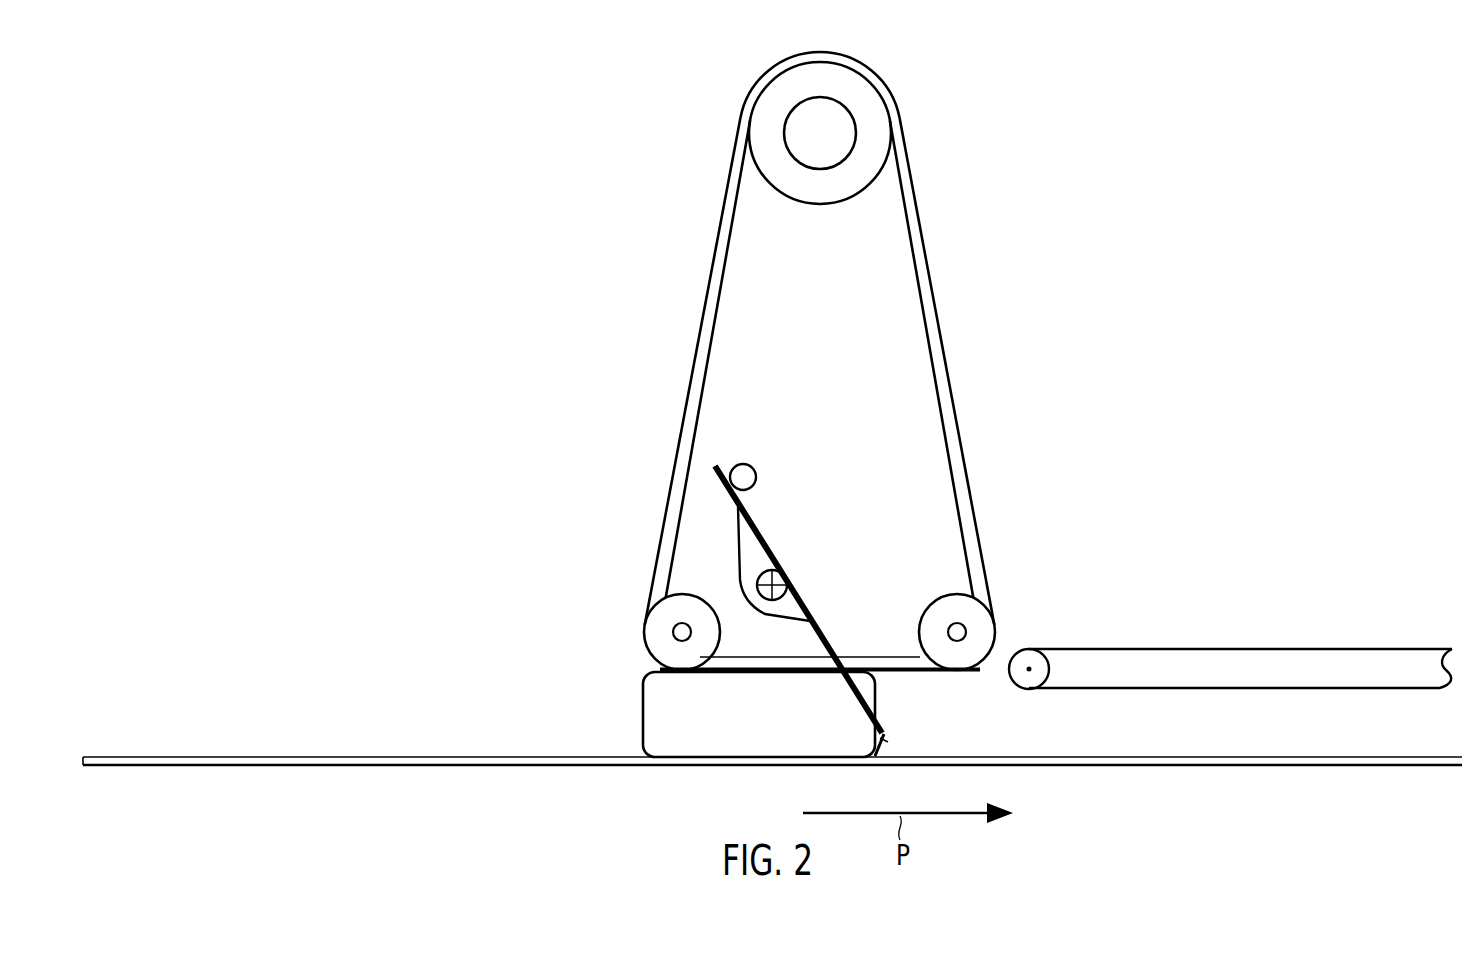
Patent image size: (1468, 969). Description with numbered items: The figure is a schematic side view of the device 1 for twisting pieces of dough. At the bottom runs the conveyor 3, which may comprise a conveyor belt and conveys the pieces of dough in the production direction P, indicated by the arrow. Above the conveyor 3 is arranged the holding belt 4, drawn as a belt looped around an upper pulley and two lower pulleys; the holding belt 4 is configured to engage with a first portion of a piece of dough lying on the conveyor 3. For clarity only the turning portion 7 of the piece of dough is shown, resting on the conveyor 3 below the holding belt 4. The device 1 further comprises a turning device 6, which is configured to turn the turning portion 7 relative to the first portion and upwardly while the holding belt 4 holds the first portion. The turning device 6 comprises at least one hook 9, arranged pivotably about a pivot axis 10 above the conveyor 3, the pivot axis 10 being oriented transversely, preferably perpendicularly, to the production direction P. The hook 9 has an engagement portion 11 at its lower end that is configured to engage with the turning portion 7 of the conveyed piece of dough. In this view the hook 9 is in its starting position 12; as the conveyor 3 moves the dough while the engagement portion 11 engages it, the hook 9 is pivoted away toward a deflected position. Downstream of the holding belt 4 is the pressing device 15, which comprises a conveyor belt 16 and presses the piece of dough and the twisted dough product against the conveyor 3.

The device 1 is at (364, 348).
The conveyor 3 is at (165, 767).
The holding belt 4 is at (958, 438).
The turning device 6 is at (716, 536).
The turning portion 7 is at (652, 707).
The hook 9 is at (836, 632).
The pivot axis 10 is at (784, 576).
The engagement portion 11 is at (885, 723).
The starting position 12 is at (916, 605).
The pressing device 15 is at (1204, 634).
The conveyor belt 16 is at (1300, 648).